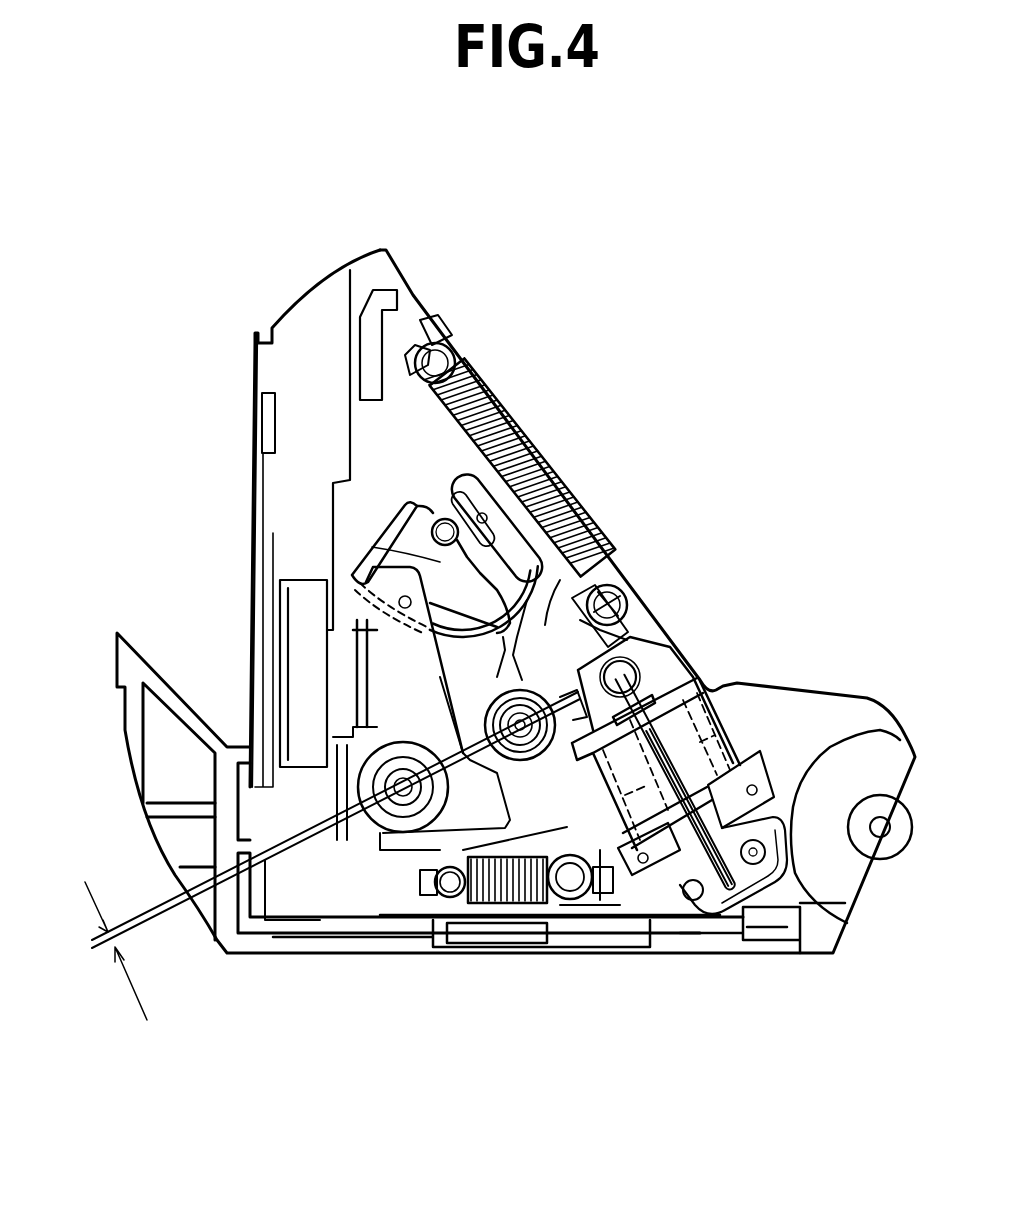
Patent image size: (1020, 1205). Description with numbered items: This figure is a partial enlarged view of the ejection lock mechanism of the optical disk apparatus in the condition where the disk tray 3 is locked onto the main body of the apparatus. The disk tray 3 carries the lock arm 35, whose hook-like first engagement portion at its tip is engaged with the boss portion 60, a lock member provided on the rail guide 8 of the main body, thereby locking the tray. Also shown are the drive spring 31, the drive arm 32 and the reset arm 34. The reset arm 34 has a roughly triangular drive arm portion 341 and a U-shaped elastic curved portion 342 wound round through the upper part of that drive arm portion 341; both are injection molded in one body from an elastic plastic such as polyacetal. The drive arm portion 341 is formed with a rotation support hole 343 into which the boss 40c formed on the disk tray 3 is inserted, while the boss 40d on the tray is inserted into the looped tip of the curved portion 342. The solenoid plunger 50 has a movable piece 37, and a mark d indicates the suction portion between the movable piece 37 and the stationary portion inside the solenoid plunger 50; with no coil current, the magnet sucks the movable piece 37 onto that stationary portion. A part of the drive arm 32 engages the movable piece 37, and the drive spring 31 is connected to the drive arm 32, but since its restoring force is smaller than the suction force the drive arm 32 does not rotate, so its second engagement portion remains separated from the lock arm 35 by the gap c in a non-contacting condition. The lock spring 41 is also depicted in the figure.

The boss 40d is at (458, 493).
The boss 40c is at (407, 508).
The rotation support hole 343 is at (367, 530).
The reset arm 34 is at (363, 545).
The drive arm portion 341 is at (345, 580).
The rail guide 8 is at (303, 620).
The boss portion 60 is at (337, 653).
The lock arm 35 is at (397, 667).
The curved portion 342 is at (450, 635).
The drive spring 31 is at (523, 437).
The drive arm 32 is at (555, 625).
The movable piece 37 is at (645, 650).
The suction portion d is at (707, 740).
The solenoid plunger 50 is at (733, 810).
The gap c is at (326, 856).
The lock spring 41 is at (493, 907).
The disk tray 3 is at (567, 823).